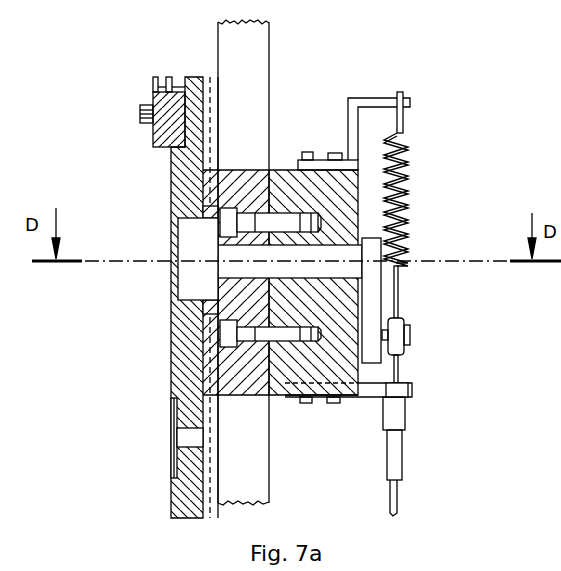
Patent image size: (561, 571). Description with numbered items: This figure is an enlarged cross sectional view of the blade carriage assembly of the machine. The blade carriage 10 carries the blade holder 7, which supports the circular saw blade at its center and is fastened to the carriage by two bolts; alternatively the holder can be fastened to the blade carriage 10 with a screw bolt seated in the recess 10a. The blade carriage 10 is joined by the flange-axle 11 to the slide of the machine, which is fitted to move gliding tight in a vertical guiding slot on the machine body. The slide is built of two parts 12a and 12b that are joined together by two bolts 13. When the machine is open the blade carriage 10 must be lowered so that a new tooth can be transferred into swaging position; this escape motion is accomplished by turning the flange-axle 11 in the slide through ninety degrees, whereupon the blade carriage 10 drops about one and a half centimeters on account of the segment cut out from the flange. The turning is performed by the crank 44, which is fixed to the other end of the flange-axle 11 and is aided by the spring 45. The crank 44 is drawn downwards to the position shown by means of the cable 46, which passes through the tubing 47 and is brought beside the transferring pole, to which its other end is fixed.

The blade holder 7 is at (155, 135).
The blade carriage 10 is at (178, 350).
The recess 10a is at (174, 452).
The flange-axle 11 is at (178, 240).
The slide part 12a is at (233, 382).
The slide part 12b is at (343, 386).
The bolts 13 is at (272, 225).
The crank 44 is at (370, 293).
The spring 45 is at (405, 215).
The cable 46 is at (398, 497).
The tubing 47 is at (396, 440).